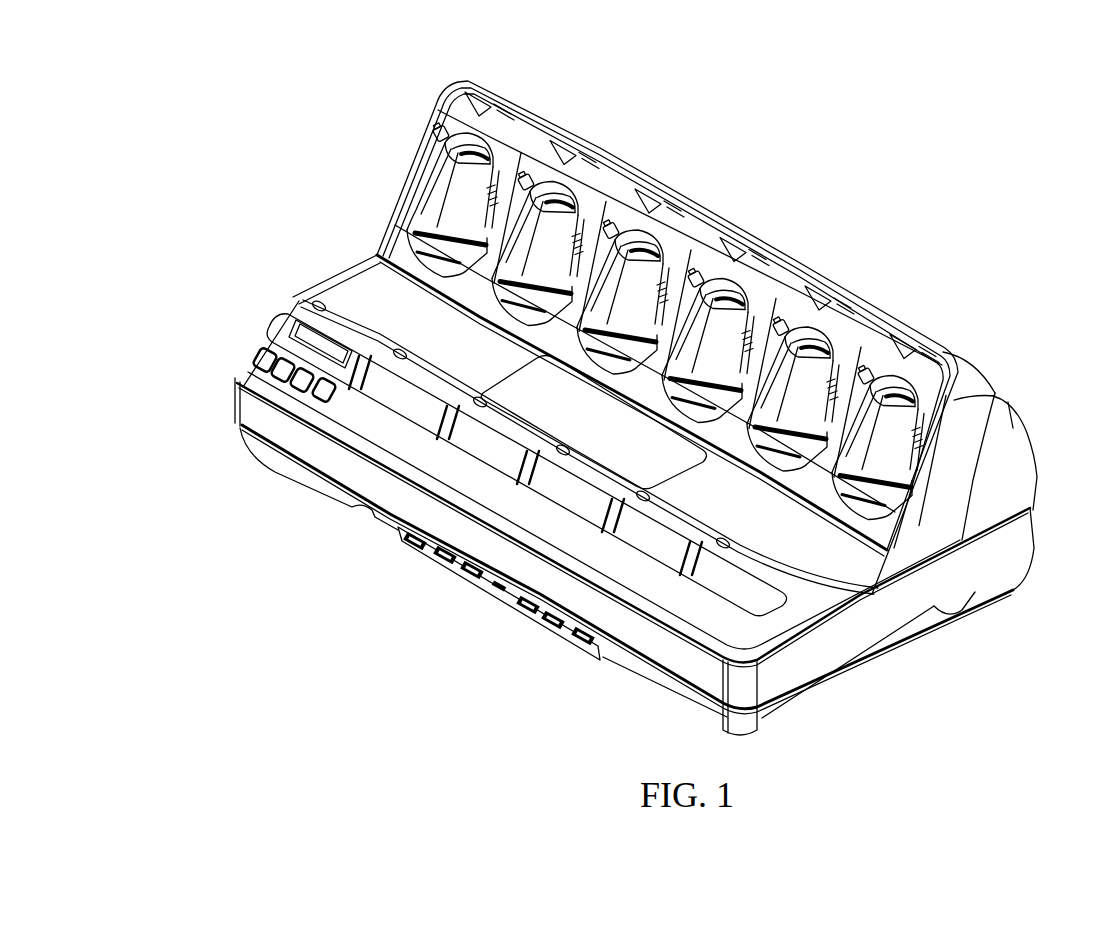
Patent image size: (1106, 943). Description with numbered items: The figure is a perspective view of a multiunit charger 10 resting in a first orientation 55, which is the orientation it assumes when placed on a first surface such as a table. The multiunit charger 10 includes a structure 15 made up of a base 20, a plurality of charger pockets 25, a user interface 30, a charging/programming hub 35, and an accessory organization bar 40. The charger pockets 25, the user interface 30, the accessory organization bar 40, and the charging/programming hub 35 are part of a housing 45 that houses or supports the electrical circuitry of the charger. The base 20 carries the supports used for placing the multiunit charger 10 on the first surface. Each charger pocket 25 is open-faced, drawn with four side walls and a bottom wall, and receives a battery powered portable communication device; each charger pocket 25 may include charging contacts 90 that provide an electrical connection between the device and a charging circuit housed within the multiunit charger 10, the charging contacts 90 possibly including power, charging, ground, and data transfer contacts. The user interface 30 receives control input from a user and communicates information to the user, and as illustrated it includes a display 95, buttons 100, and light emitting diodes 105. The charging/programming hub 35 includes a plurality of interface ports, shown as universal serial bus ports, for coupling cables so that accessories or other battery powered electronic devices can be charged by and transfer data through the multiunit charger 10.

The multiunit charger 10 is at (357, 265).
The structure 15 is at (1022, 526).
The base 20 is at (747, 691).
The charger pockets 25 is at (478, 157).
The user interface 30 is at (442, 472).
The charging/programming hub 35 is at (510, 600).
The accessory organization bar 40 is at (499, 88).
The housing 45 is at (977, 597).
The first orientation 55 is at (1020, 381).
The charging contacts 90 is at (822, 414).
The display 95 is at (303, 333).
The buttons 100 is at (260, 356).
The light emitting diodes 105 is at (320, 302).